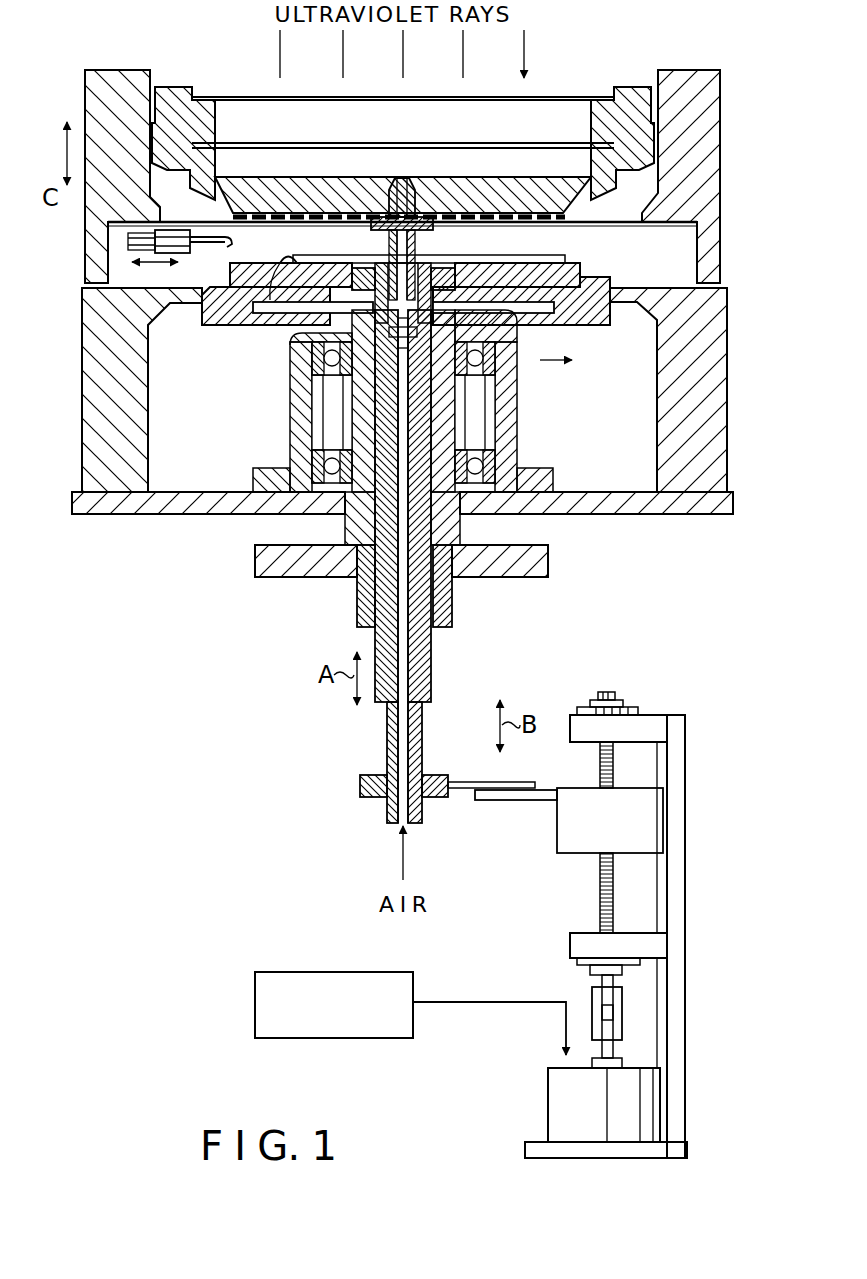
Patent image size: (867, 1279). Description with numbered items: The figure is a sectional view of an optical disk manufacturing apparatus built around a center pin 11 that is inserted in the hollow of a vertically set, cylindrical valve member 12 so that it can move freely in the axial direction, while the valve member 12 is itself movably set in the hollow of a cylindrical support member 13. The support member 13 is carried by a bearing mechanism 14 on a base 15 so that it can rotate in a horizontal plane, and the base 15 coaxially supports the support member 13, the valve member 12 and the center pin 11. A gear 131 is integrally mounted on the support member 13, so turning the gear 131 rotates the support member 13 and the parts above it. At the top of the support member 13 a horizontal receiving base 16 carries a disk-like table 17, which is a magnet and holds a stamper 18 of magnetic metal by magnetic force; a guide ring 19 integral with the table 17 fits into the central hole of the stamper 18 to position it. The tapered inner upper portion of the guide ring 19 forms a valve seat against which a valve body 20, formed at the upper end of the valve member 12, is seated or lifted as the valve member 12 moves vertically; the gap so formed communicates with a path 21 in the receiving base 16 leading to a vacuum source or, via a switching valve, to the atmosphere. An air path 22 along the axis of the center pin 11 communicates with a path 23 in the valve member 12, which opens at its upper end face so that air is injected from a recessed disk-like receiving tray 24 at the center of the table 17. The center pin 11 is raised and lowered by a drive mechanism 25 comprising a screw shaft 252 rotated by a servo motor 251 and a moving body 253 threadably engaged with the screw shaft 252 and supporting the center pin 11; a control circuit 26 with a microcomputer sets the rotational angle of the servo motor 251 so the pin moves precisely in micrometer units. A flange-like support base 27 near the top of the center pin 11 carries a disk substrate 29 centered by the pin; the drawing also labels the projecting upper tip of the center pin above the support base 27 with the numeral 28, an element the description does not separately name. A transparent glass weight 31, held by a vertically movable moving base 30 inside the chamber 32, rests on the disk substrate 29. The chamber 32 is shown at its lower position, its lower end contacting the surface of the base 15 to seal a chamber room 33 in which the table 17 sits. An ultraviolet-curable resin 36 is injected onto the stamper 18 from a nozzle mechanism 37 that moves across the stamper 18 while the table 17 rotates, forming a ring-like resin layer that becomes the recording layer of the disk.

The center pin 11 is at (420, 640).
The valve member 12 is at (435, 605).
The support member 13 is at (445, 520).
The bearing mechanism 14 is at (316, 360).
The base 15 is at (140, 467).
The receiving base 16 is at (216, 325).
The table 17 is at (580, 268).
The stamper 18 is at (563, 262).
The guide ring 19 is at (455, 265).
The valve body 20 is at (436, 268).
The path 21 is at (553, 323).
The air path 22 is at (405, 672).
The path 23 is at (422, 392).
The receiving tray 24 is at (375, 272).
The drive mechanism 25 is at (688, 895).
The control circuit 26 is at (415, 982).
The support base 27 is at (418, 180).
The nozzle 28 is at (397, 178).
The disk substrate 29 is at (263, 218).
The moving base 30 is at (633, 168).
The weight 31 is at (311, 185).
The chamber 32 is at (715, 108).
The chamber room 33 is at (703, 245).
The resin 36 is at (275, 300).
The nozzle mechanism 37 is at (225, 246).
The gear 131 is at (548, 558).
The servo motor 251 is at (553, 1103).
The screw shaft 252 is at (600, 902).
The moving body 253 is at (553, 802).